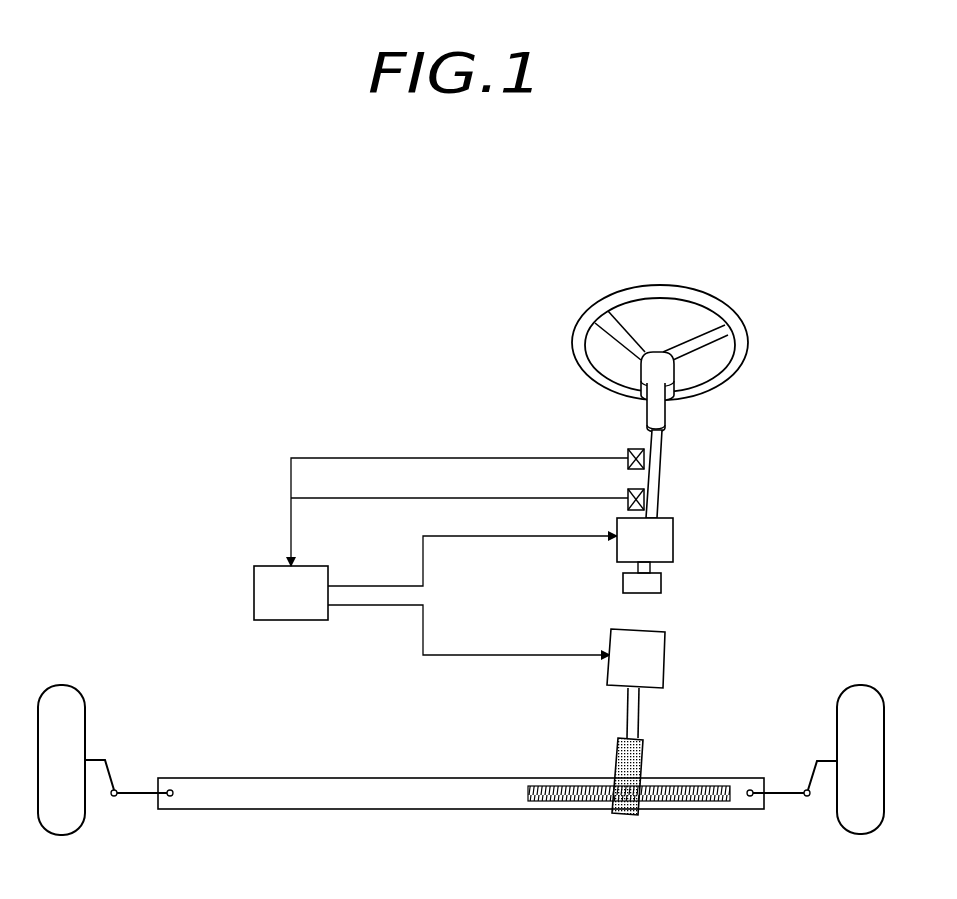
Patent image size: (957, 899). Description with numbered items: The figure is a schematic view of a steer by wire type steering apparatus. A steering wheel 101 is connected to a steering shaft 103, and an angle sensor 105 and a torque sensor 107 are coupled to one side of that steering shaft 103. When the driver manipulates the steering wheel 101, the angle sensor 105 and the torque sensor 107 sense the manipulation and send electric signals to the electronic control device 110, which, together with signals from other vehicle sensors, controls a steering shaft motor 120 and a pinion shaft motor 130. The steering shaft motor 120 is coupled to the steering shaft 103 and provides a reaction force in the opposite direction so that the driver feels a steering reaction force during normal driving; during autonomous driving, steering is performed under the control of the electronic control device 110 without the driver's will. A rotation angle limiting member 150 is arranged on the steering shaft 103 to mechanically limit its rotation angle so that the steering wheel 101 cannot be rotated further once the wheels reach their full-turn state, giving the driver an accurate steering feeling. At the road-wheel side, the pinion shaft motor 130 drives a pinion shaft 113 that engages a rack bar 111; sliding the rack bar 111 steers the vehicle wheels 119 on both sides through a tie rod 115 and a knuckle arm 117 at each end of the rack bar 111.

The steering wheel 101 is at (745, 348).
The steering shaft 103 is at (660, 478).
The angle sensor 105 is at (626, 452).
The torque sensor 107 is at (626, 492).
The electronic control device 110 is at (252, 593).
The rack bar 111 is at (375, 810).
The pinion shaft 113 is at (645, 752).
The tie rod 115 is at (130, 800).
The knuckle arm 117 is at (110, 775).
The vehicle wheel 119 is at (85, 713).
The steering shaft motor 120 is at (673, 545).
The pinion shaft motor 130 is at (663, 642).
The rotation angle limiting member 150 is at (661, 588).